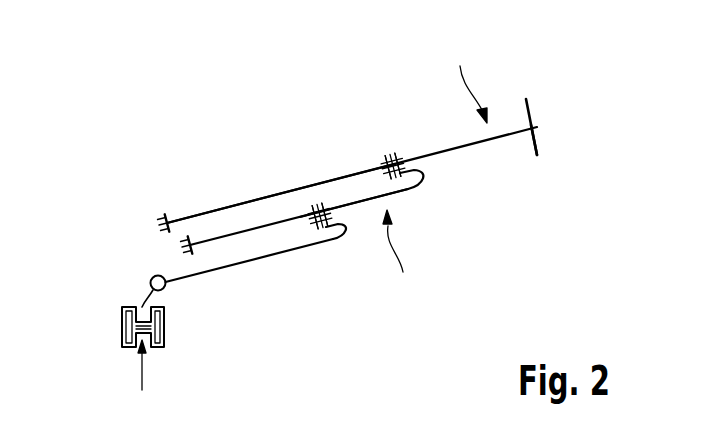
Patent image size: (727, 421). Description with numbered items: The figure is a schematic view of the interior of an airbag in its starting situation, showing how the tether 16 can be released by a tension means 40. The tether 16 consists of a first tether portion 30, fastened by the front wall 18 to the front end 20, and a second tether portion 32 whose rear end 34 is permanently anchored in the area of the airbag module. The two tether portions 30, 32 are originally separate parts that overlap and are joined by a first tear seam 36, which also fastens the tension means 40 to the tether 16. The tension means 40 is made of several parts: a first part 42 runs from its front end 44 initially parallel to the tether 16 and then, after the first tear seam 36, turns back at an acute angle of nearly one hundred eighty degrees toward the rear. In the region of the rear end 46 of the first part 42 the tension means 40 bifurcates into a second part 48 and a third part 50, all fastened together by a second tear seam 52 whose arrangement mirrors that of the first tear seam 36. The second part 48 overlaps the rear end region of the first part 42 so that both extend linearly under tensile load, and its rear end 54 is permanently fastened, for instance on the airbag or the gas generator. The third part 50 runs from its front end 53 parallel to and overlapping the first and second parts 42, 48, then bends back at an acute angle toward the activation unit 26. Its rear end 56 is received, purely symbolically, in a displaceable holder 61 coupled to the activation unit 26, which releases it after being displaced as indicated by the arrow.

The tether 16 is at (468, 80).
The front wall 18 is at (532, 109).
The front end 20 is at (540, 130).
The activation unit 26 is at (122, 322).
The first tether portion 30 is at (482, 145).
The second tether portion 32 is at (323, 178).
The rear end 34 is at (170, 213).
The first tear seam 36 is at (398, 157).
The tension means 40 is at (399, 257).
The first part 42 is at (405, 196).
The front end 44 is at (383, 153).
The rear end 46 is at (313, 207).
The second part 48 is at (238, 229).
The third part 50 is at (236, 265).
The second tear seam 52 is at (346, 236).
The front end 53 is at (312, 233).
The rear end 54 is at (190, 236).
The rear end 56 is at (168, 290).
The displaceable holder 61 is at (143, 300).